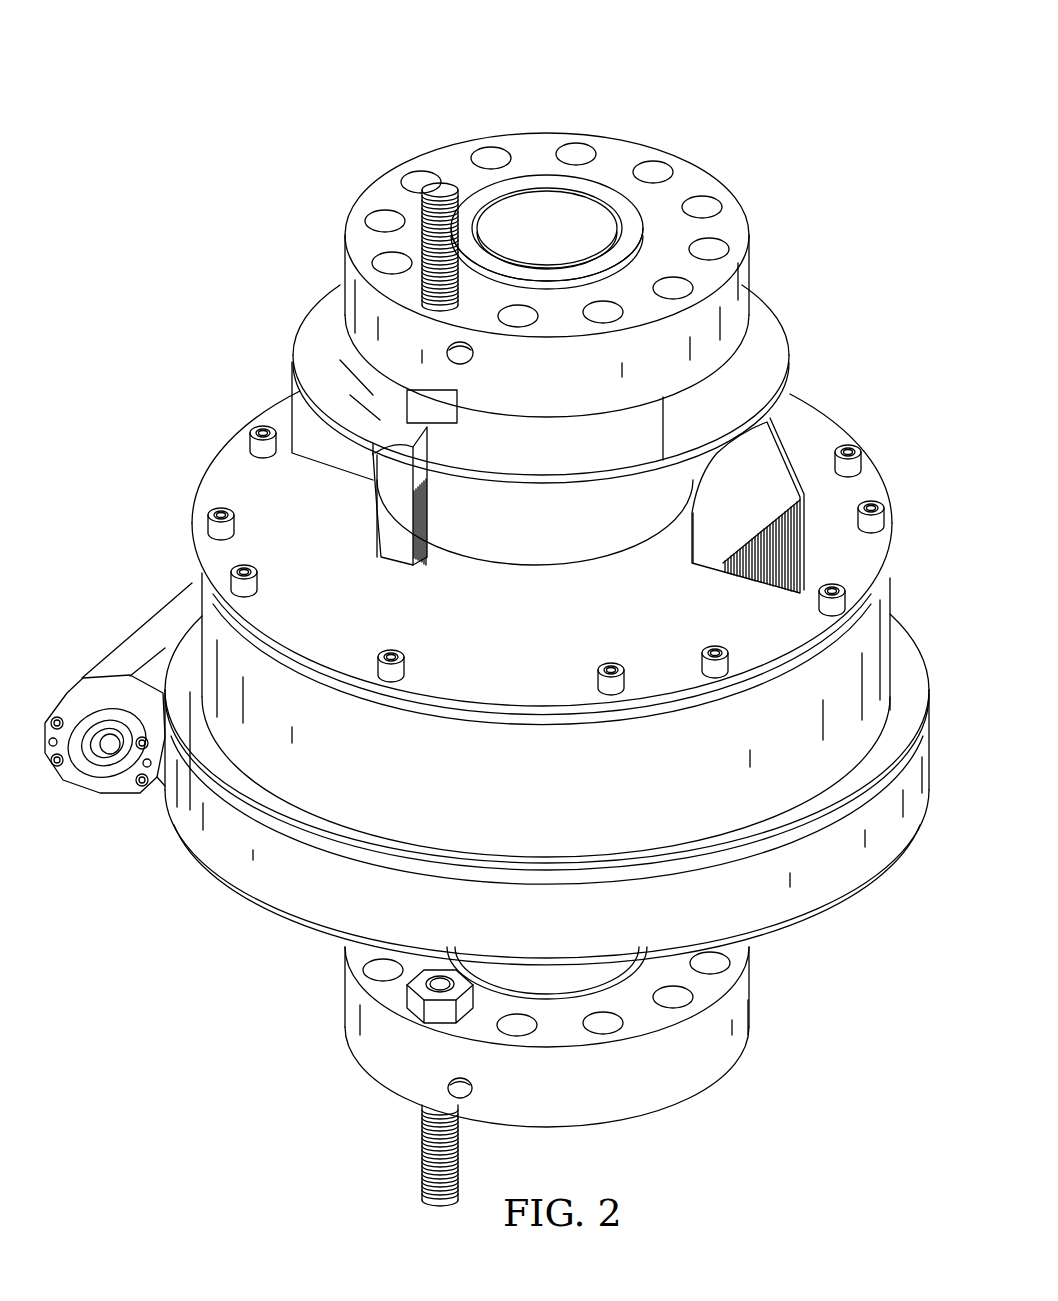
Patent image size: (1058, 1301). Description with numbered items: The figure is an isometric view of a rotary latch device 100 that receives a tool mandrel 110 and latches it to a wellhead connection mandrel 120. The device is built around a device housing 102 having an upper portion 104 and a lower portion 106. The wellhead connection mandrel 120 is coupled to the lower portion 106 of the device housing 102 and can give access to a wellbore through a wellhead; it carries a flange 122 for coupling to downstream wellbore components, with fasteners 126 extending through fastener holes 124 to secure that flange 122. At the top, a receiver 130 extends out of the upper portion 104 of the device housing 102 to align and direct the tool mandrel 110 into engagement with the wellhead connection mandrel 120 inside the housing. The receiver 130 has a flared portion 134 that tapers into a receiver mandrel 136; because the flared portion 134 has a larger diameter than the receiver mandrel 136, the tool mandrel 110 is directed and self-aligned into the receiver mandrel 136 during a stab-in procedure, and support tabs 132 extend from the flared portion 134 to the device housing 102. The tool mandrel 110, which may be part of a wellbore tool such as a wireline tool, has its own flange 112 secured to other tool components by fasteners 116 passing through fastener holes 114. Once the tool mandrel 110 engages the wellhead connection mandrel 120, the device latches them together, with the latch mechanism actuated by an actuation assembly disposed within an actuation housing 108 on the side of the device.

The rotary latch device 100 is at (811, 58).
The device housing 102 is at (891, 592).
The upper portion 104 is at (215, 627).
The lower portion 106 is at (851, 897).
The actuation housing 108 is at (128, 648).
The tool mandrel 110 is at (655, 417).
The flange 112 is at (693, 180).
The fastener holes 114 is at (575, 157).
The fasteners 116 is at (424, 207).
The wellhead connection mandrel 120 is at (561, 984).
The flange 122 is at (751, 998).
The fastener holes 124 is at (679, 999).
The fasteners 126 is at (422, 1150).
The receiver 130 is at (792, 364).
The support tabs 132 is at (788, 450).
The flared portion 134 is at (323, 340).
The receiver mandrel 136 is at (383, 528).